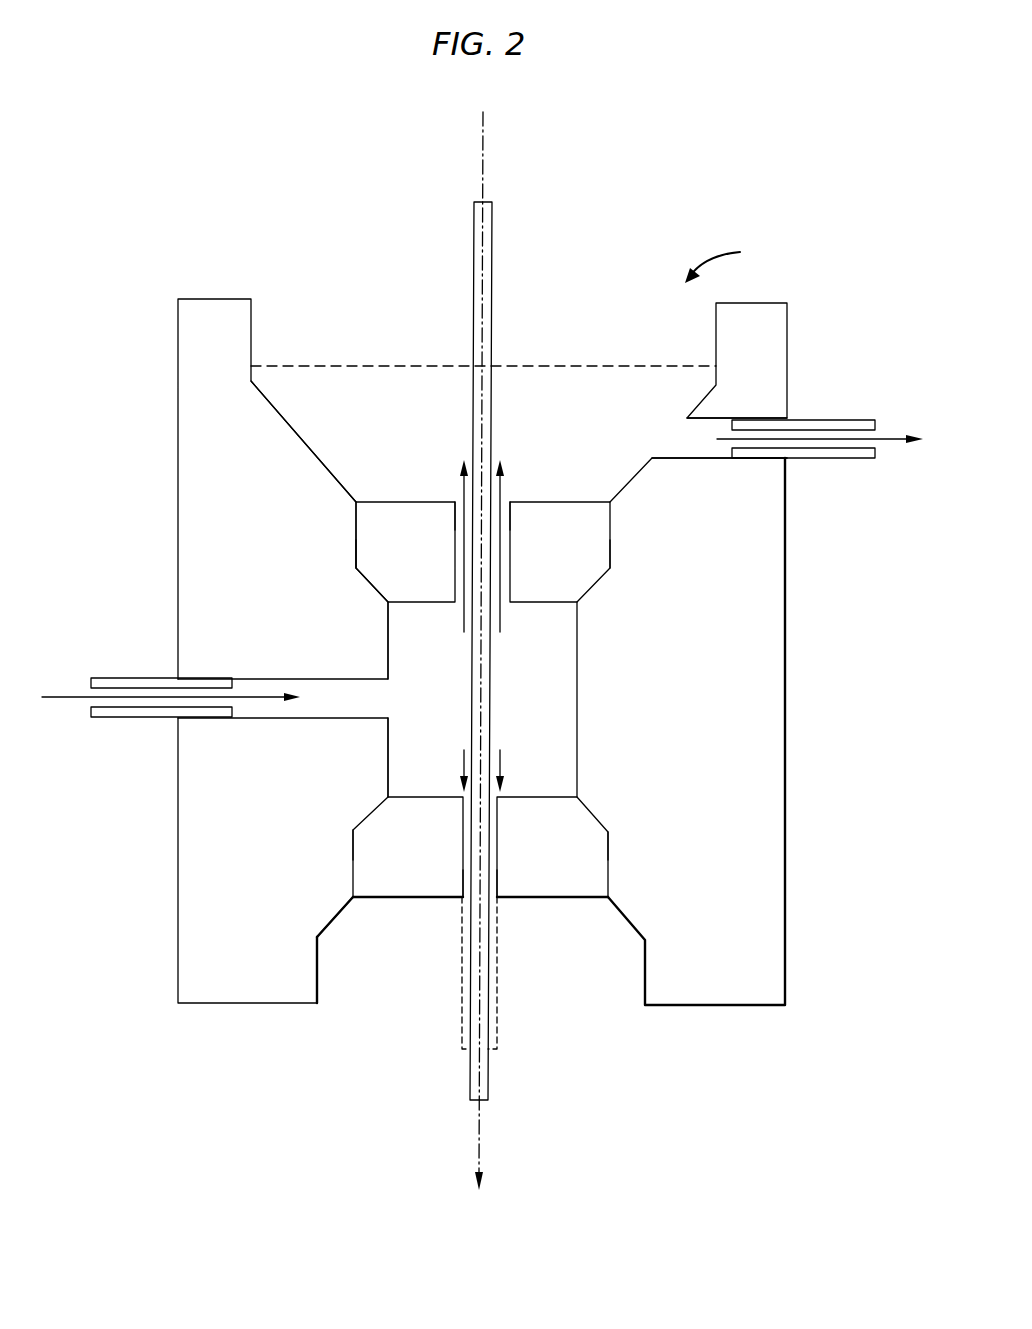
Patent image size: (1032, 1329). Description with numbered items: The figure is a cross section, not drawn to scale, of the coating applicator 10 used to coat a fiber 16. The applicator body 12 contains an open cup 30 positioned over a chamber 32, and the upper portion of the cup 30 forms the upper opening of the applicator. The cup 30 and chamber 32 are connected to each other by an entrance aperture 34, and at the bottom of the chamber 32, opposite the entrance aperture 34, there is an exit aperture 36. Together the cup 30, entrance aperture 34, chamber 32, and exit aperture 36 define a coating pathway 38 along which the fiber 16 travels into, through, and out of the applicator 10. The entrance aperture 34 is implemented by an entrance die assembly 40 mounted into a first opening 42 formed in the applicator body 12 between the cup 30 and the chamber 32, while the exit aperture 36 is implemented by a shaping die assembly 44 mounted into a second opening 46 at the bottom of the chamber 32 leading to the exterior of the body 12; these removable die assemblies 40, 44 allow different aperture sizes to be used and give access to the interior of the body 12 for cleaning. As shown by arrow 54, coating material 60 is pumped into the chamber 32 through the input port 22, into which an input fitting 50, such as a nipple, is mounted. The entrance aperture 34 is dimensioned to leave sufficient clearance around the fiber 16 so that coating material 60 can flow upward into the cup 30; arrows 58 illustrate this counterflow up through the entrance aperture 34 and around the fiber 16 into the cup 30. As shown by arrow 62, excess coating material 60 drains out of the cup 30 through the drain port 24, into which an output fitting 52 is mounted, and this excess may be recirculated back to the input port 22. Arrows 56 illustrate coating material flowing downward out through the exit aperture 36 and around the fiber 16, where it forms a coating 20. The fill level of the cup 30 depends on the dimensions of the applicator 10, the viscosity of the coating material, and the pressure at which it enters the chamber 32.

The coating applicator 10 is at (728, 261).
The applicator body 12 is at (786, 727).
The fiber 16 is at (493, 275).
The coating 20 is at (505, 1033).
The input port 22 is at (326, 720).
The drain port 24 is at (694, 459).
The open cup 30 is at (300, 437).
The chamber 32 is at (388, 726).
The entrance aperture 34 is at (455, 520).
The exit aperture 36 is at (463, 880).
The coating pathway 38 is at (484, 160).
The entrance die assembly 40 is at (401, 564).
The first opening 42 is at (356, 548).
The shaping die assembly 44 is at (399, 860).
The second opening 46 is at (353, 843).
The input fitting 50 is at (130, 679).
The output fitting 52 is at (843, 420).
The arrow 54 is at (72, 699).
The arrows 56 is at (464, 762).
The arrows 58 is at (464, 618).
The coating material 60 is at (377, 365).
The arrow 62 is at (904, 441).